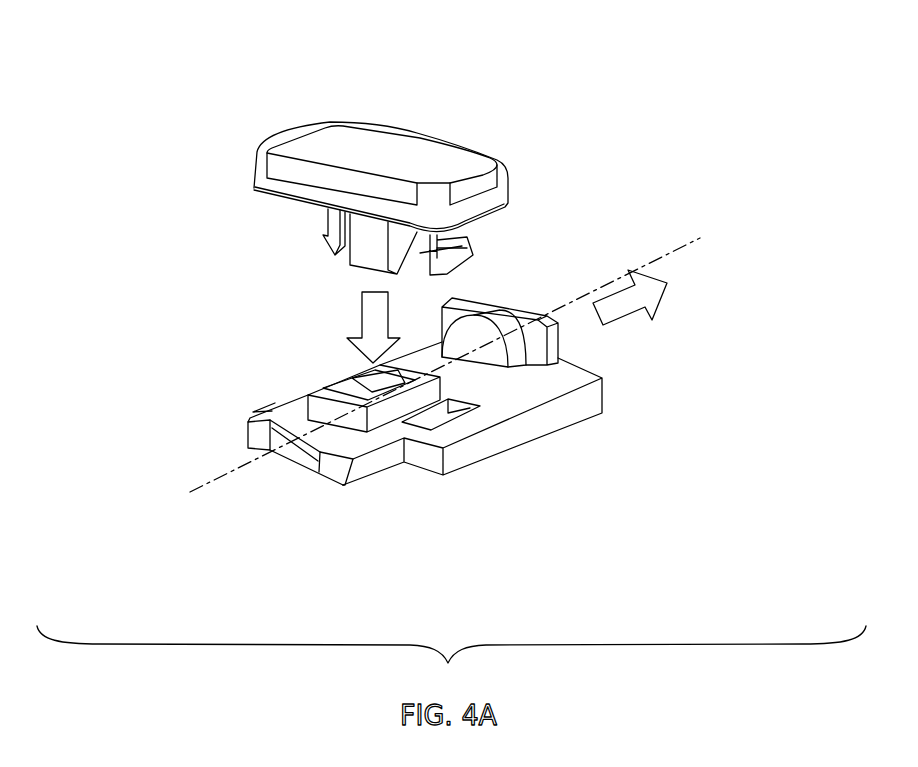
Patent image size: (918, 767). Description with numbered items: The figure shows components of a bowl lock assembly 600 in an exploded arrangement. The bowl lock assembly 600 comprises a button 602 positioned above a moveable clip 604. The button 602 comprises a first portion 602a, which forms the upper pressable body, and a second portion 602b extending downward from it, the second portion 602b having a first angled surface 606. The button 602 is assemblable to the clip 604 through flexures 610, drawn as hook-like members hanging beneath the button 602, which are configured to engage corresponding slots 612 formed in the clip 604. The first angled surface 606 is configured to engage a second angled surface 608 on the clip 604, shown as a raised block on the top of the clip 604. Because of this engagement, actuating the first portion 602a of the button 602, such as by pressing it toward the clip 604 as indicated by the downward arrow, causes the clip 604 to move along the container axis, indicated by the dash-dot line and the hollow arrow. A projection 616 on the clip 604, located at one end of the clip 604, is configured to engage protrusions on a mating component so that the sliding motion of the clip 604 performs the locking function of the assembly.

The bowl lock assembly 600 is at (120, 112).
The button 602 is at (398, 147).
The first portion 602a is at (308, 141).
The second portion 602b is at (363, 225).
The moveable clip 604 is at (518, 394).
The first angled surface 606 is at (468, 237).
The second angled surface 608 is at (366, 382).
The flexures 610 is at (323, 234).
The slots 612 is at (303, 408).
The projection 616 is at (332, 468).